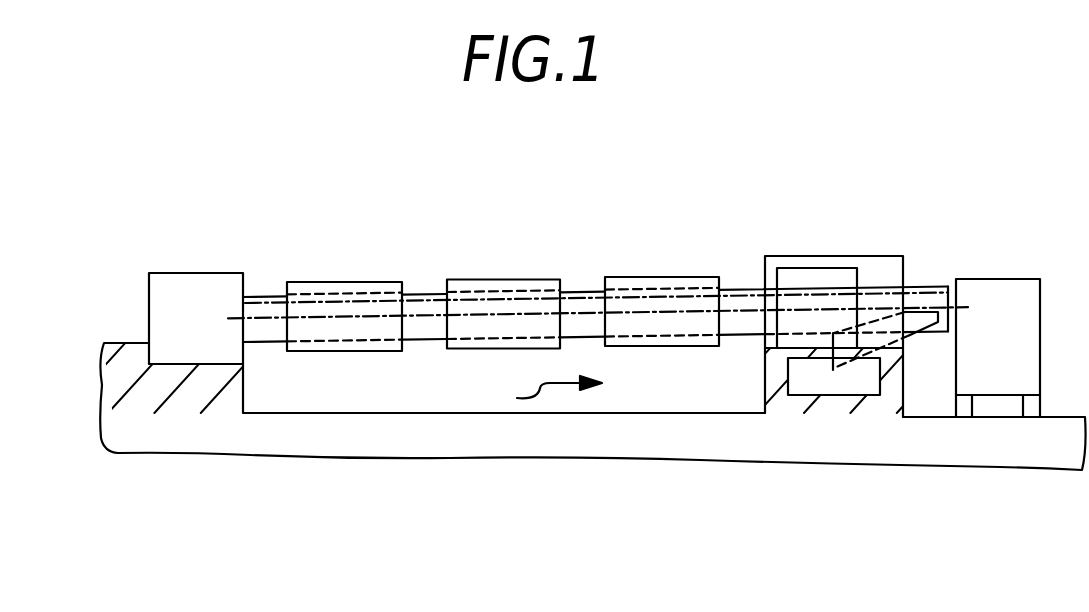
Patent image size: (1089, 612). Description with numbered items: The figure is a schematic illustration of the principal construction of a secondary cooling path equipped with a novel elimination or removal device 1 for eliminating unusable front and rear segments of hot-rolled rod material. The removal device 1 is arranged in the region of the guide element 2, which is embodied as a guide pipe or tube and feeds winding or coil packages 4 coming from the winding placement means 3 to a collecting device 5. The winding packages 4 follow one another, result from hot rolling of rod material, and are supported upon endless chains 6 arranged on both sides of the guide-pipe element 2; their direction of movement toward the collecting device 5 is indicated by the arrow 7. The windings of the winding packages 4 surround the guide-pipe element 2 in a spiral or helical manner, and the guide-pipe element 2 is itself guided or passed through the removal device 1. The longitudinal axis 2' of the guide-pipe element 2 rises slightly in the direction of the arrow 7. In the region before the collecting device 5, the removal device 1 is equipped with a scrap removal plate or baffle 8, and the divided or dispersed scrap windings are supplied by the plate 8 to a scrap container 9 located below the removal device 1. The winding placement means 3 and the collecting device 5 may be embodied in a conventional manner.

The elimination or removal device 1 is at (878, 268).
The guide element 2 is at (595, 346).
The longitudinal axis 2' is at (598, 354).
The winding placement means 3 is at (197, 291).
The winding or coil packages 4 is at (470, 287).
The collecting device 5 is at (1014, 295).
The endless chains 6 is at (731, 293).
The arrow 7 is at (546, 393).
The scrap removal plate or baffle 8 is at (833, 370).
The scrap container 9 is at (800, 377).